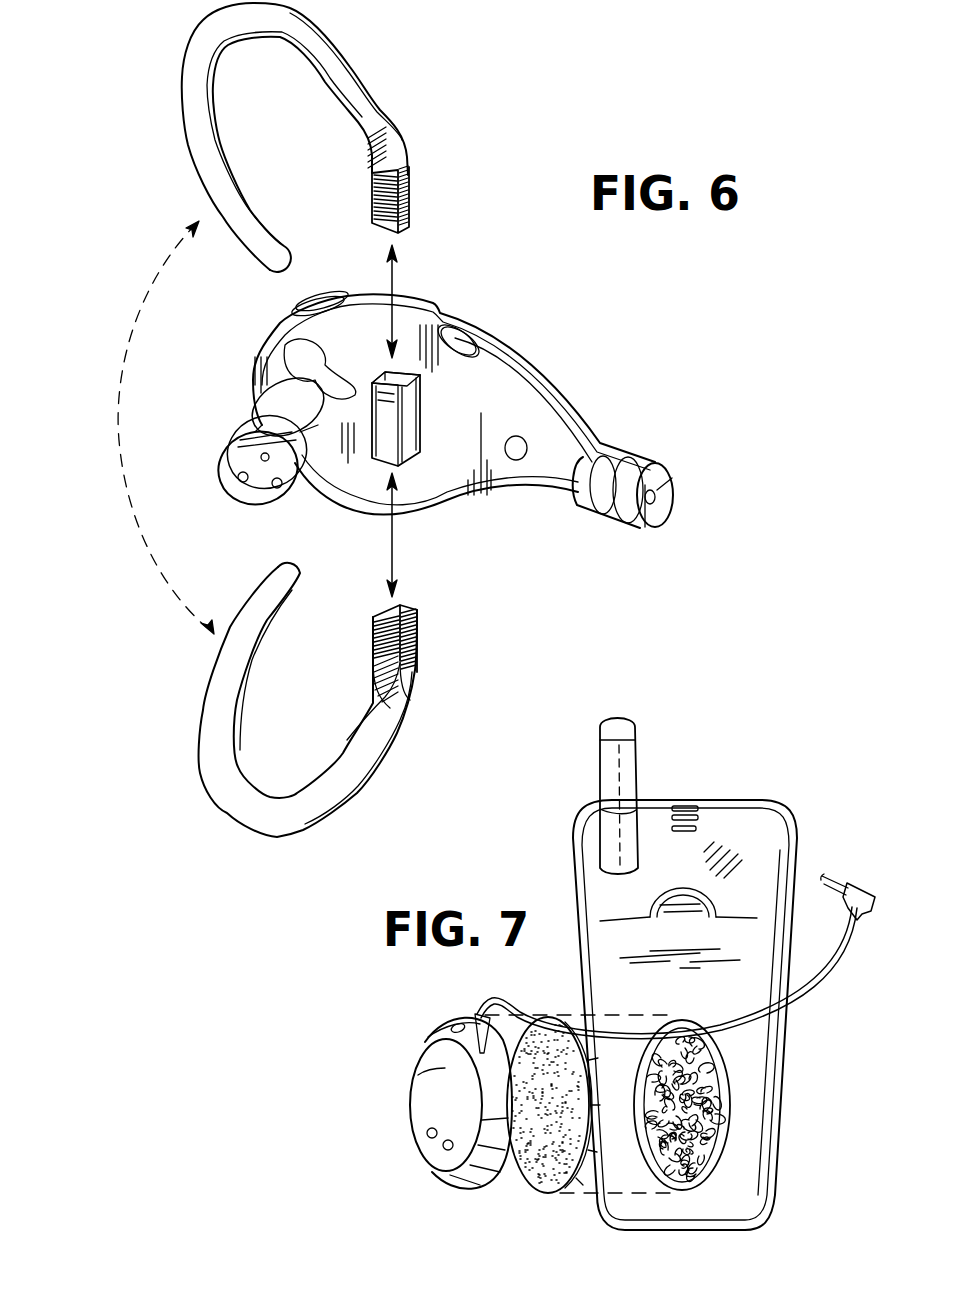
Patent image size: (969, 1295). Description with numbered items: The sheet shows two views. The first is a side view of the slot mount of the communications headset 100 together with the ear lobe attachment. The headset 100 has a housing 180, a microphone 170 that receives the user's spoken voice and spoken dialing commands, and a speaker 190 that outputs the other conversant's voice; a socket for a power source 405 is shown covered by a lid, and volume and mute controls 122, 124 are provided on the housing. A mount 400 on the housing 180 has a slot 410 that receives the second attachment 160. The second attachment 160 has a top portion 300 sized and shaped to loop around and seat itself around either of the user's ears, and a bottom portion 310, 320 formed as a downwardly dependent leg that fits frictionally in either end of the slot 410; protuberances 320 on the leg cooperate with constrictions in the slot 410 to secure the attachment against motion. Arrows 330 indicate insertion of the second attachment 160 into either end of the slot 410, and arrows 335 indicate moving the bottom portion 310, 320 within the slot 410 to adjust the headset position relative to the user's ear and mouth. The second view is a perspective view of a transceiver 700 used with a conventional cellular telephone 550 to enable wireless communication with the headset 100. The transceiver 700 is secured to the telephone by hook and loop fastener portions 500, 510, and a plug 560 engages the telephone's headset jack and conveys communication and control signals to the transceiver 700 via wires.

In FIG. 6, the communications headset 100 is at (562, 430).
In FIG. 6, the volume control 122 is at (470, 338).
In FIG. 6, the mute control 124 is at (333, 292).
In FIG. 6, the second attachment 160 is at (338, 26).
In FIG. 6, the microphone 170 is at (625, 522).
In FIG. 6, the housing 180 is at (330, 485).
In FIG. 6, the speaker 190 is at (240, 468).
In FIG. 6, the top portion 300 is at (200, 92).
In FIG. 6, the bottom portion 310 is at (410, 160).
In FIG. 6, the protuberances 320 is at (372, 205).
In FIG. 6, the arrows 330 is at (123, 350).
In FIG. 6, the arrows 335 is at (400, 245).
In FIG. 6, the mount 400 is at (410, 430).
In FIG. 6, the socket for a power source 405 is at (290, 355).
In FIG. 6, the slot 410 is at (402, 378).
In FIG. 7, the hook and loop fastener portion 500 is at (703, 1150).
In FIG. 7, the hook and loop fastener portion 510 is at (533, 1177).
In FIG. 7, the cellular telephone 550 is at (733, 807).
In FIG. 7, the plug 560 is at (815, 983).
In FIG. 7, the transceiver 700 is at (425, 1082).